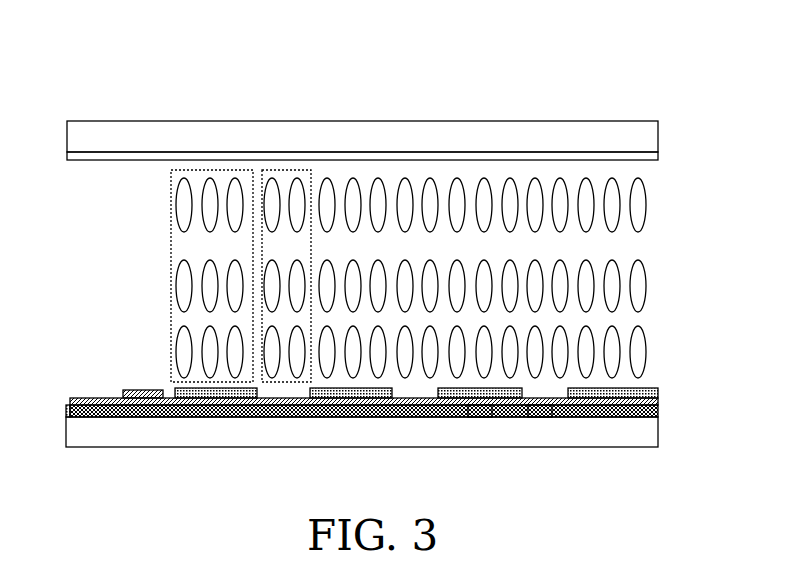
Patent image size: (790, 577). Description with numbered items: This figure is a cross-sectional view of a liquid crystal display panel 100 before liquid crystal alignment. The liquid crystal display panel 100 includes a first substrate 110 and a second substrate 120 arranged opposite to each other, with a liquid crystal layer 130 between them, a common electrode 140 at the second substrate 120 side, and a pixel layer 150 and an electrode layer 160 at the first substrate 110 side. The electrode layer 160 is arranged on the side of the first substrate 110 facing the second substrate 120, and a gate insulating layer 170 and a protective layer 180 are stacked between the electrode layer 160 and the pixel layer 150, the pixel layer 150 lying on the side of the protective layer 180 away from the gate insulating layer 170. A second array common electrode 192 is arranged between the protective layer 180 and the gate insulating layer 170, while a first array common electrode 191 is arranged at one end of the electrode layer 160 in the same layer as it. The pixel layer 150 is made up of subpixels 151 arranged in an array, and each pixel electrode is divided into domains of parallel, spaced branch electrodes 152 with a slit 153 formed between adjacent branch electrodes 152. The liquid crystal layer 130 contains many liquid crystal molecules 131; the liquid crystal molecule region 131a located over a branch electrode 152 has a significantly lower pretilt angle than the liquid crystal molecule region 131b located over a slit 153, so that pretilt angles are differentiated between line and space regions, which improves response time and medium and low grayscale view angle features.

The liquid crystal display panel 100 is at (340, 97).
The first substrate 110 is at (658, 430).
The second substrate 120 is at (658, 128).
The liquid crystal layer 130 is at (408, 272).
The liquid crystal molecule 131 is at (655, 205).
The liquid crystal molecule region arranged corresponding to branch electrode 131a is at (171, 223).
The liquid crystal molecule region arranged corresponding to slit 131b is at (312, 175).
The common electrode 140 is at (658, 155).
The pixel layer 150 is at (364, 418).
The subpixel 151 is at (508, 453).
The branch electrode 152 is at (480, 418).
The slit 153 is at (546, 417).
The electrode layer 160 is at (658, 409).
The gate insulating layer 170 is at (86, 398).
The protective layer 180 is at (658, 396).
The first array common electrode 191 is at (67, 410).
The second array common electrode 192 is at (138, 389).